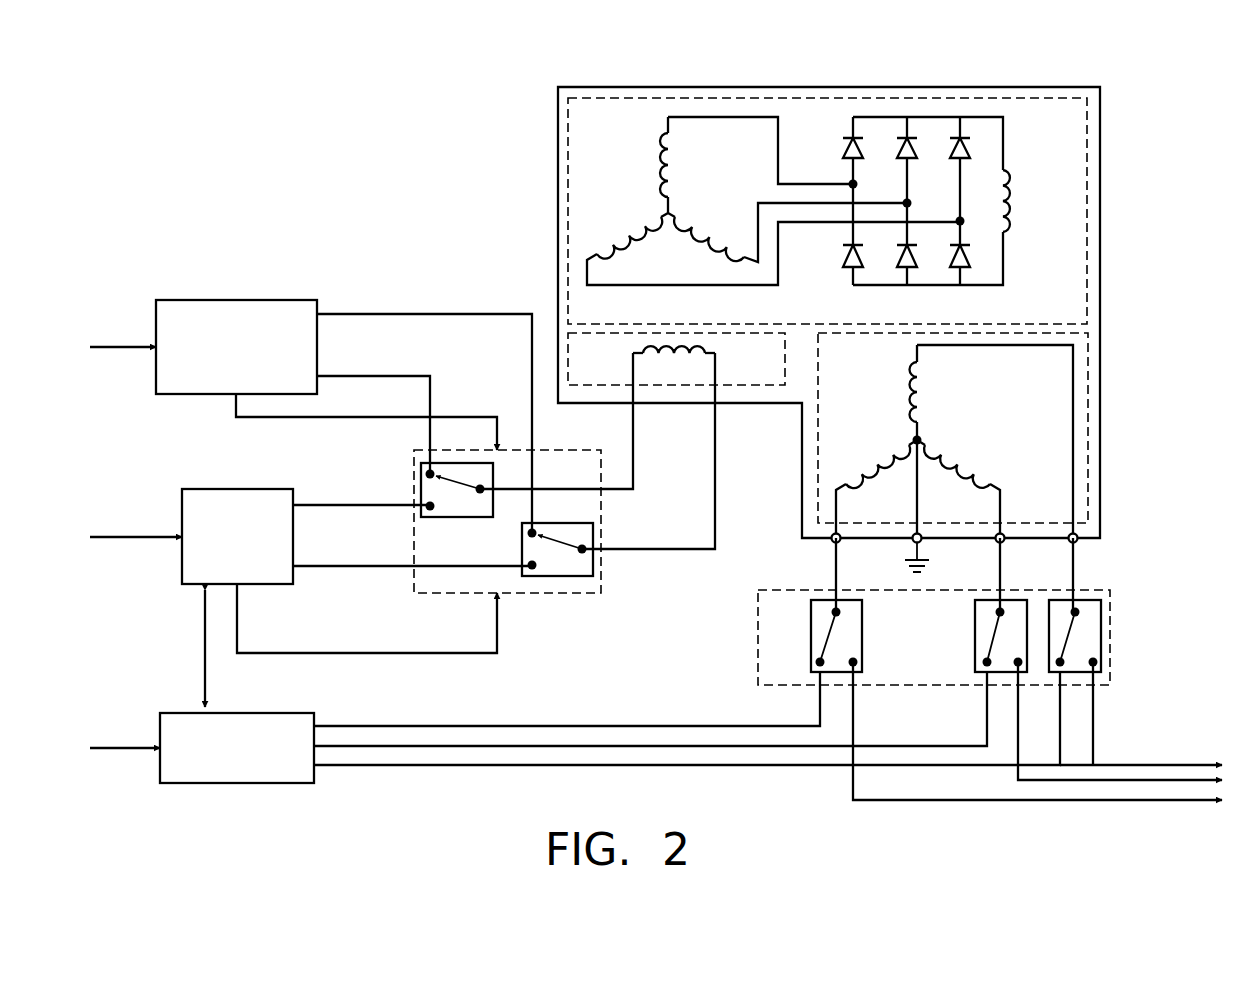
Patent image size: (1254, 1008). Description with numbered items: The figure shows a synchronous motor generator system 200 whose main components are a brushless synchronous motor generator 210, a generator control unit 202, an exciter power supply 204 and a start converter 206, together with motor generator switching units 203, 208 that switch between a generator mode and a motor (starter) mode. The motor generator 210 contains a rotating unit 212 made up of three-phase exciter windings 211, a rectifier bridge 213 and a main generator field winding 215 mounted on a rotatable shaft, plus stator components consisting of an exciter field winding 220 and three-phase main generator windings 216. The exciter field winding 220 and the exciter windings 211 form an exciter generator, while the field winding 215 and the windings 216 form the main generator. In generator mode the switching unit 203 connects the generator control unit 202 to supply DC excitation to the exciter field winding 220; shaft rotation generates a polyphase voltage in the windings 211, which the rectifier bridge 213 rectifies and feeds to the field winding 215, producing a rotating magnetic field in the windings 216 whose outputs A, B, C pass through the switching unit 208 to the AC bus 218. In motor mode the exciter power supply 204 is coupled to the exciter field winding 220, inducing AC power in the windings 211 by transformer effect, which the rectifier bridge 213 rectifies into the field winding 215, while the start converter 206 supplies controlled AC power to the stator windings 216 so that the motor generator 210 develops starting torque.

The synchronous motor generator system 200 is at (436, 191).
The generator control unit 202 is at (272, 300).
The motor generator switching unit 203 is at (579, 591).
The exciter power supply 204 is at (243, 489).
The start converter 206 is at (255, 783).
The motor generator switching unit 208 is at (1112, 611).
The brushless synchronous motor generator 210 is at (1099, 327).
The three-phase exciter windings 211 is at (603, 187).
The rotating unit 212 is at (1087, 180).
The rectifier bridge 213 is at (926, 126).
The main generator field winding 215 is at (1010, 172).
The three-phase main generator windings 216 is at (959, 427).
The AC bus 218 is at (1138, 814).
The exciter field winding 220 is at (700, 345).